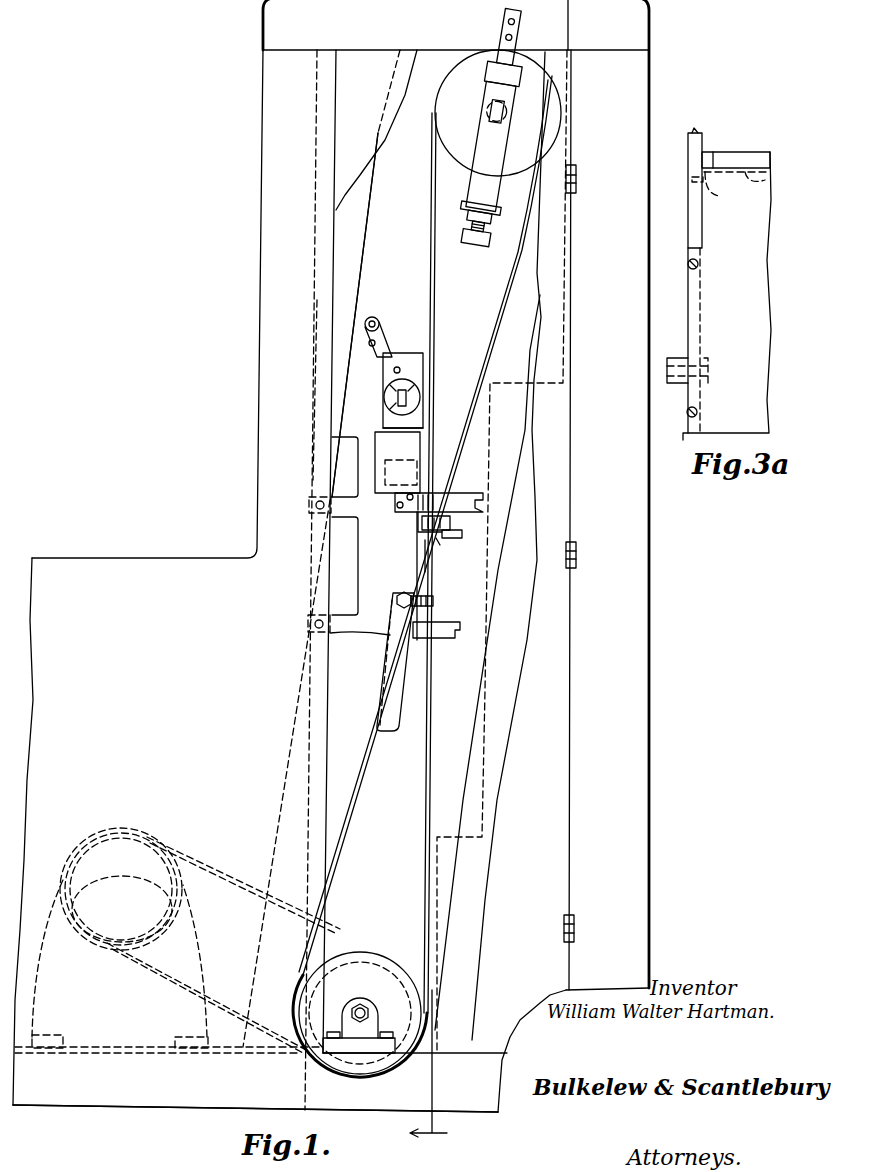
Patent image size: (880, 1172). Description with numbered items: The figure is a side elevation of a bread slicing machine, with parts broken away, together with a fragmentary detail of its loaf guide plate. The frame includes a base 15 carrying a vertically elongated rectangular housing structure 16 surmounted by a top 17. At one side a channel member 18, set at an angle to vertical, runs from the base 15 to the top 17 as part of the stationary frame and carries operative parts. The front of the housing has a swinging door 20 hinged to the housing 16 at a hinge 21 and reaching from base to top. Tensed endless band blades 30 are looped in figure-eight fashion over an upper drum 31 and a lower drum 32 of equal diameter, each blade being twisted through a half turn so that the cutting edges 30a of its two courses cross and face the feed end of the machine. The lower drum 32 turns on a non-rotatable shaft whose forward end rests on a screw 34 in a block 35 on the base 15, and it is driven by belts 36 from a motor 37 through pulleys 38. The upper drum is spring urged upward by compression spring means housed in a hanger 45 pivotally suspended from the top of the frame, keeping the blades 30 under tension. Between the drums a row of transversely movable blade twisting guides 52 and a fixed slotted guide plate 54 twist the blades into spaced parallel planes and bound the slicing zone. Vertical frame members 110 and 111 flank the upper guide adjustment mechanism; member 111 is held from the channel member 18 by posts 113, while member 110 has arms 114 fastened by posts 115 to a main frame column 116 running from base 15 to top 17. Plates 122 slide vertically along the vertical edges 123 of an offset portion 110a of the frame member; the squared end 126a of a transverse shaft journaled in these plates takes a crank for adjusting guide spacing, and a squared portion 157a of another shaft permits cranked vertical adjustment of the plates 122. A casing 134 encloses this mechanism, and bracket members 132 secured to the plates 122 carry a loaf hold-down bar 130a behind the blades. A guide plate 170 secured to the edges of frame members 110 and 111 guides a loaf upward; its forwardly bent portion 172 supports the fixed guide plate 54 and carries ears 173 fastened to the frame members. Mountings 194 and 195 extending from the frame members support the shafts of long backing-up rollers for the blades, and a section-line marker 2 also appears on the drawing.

In FIG. 1, the section line 2 is at (588, 2).
In FIG. 1, the base 15 is at (171, 1109).
In FIG. 1, the rectangular frame or housing structure 16 is at (253, 190).
In FIG. 1, the top 17 is at (255, 25).
In FIG. 1, the channel member 18 is at (464, 537).
In FIG. 1, the swinging door 20 is at (569, 688).
In FIG. 1, the hinge 21 is at (577, 178).
In FIG. 1, the endless band blades 30 is at (430, 266).
In FIG. 1, the cutting edges 30a is at (428, 572).
In FIG. 1, the upper band blade supporting drum 31 is at (455, 128).
In FIG. 1, the lower band blade supporting drum 32 is at (372, 975).
In FIG. 1, the screw 34 is at (362, 1003).
In FIG. 1, the block 35 is at (358, 1046).
In FIG. 1, the belts 36 is at (220, 868).
In FIG. 1, the motor 37 is at (117, 1018).
In FIG. 1, the pulleys 38 is at (137, 830).
In FIG. 1, the hanger 45 is at (482, 186).
In FIG. 1, the blade twisting guides 52 is at (459, 525).
In FIG. 1, the fixed blade guide plate 54 is at (435, 600).
In FIG. 3A, the fixed blade guide plate 54 is at (762, 156).
In FIG. 1, the vertical frame member 110 is at (374, 386).
In FIG. 1, the offset portion 110a is at (363, 438).
In FIG. 3A, the vertical frame member 111 is at (695, 222).
In FIG. 3A, the brackets or posts 113 is at (682, 385).
In FIG. 1, the arms 114 is at (343, 497).
In FIG. 1, the posts 115 is at (315, 510).
In FIG. 1, the vertical main frame column 116 is at (318, 385).
In FIG. 1, the plates 122 is at (420, 417).
In FIG. 1, the vertical edges 123 is at (410, 427).
In FIG. 1, the squared end of shaft 126a is at (397, 367).
In FIG. 1, the loaf hold-down bar 130a is at (462, 538).
In FIG. 1, the bracket members 132 is at (449, 549).
In FIG. 1, the casing 134 is at (423, 370).
In FIG. 1, the squared portion of shaft 157a is at (380, 345).
In FIG. 1, the guide plate 170 is at (378, 703).
In FIG. 3A, the guide plate 170 is at (747, 323).
In FIG. 3A, the forwardly bent portion 172 is at (766, 180).
In FIG. 3A, the ears 173 is at (710, 196).
In FIG. 1, the mounting 194 is at (408, 505).
In FIG. 1, the mounting 195 is at (425, 640).